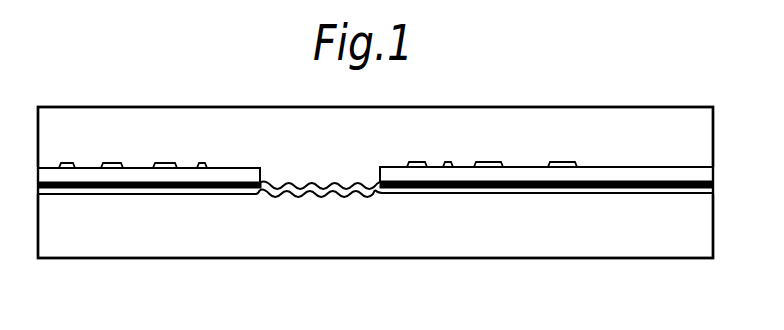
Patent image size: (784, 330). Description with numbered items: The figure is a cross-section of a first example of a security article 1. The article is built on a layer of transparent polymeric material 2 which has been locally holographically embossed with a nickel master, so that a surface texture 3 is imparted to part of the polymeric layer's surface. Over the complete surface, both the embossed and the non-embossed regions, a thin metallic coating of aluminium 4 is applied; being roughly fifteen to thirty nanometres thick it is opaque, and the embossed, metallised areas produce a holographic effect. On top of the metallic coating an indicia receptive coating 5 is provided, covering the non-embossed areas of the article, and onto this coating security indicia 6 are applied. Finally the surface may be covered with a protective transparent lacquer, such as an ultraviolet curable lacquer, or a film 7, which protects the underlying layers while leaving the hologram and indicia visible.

The security article 1 is at (698, 85).
The layer of transparent polymeric material 2 is at (573, 228).
The surface texture 3 is at (302, 198).
The thin metallic coating of aluminium 4 is at (177, 194).
The indicia receptive coating 5 is at (627, 173).
The security indicia 6 is at (163, 162).
The protective transparent lacquer or film 7 is at (233, 125).